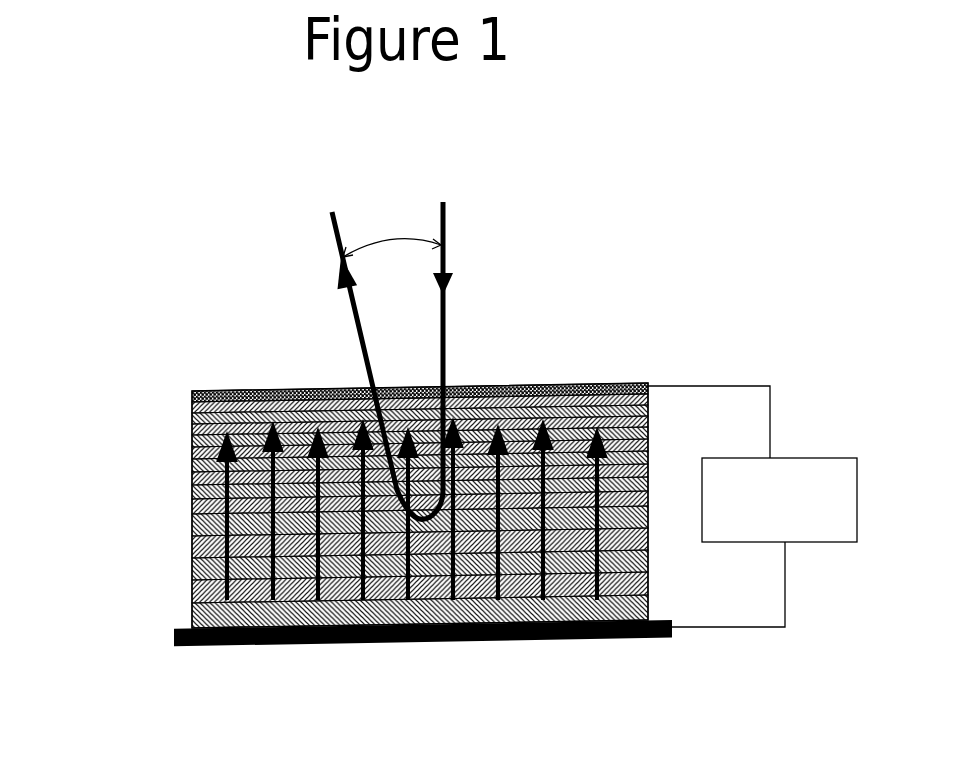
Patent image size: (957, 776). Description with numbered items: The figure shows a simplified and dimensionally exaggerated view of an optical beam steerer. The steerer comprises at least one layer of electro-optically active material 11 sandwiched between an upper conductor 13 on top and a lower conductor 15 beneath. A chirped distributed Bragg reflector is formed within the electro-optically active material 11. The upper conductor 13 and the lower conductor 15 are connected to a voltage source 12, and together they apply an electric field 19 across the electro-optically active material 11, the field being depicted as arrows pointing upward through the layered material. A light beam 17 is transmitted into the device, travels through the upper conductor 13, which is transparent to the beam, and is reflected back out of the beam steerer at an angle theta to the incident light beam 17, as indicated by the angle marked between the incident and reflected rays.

The electro-optically active material 11 is at (200, 568).
The voltage source 12 is at (822, 457).
The upper conductor 13 is at (190, 398).
The lower conductor 15 is at (280, 647).
The light beam 17 is at (447, 318).
The electric field 19 is at (214, 522).